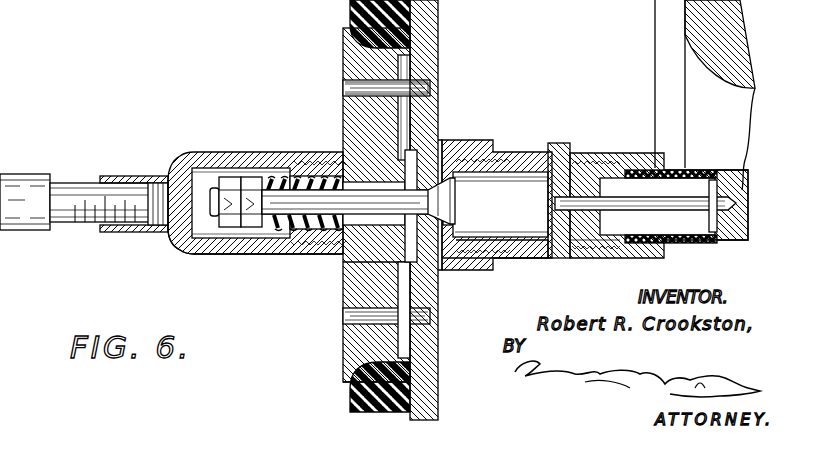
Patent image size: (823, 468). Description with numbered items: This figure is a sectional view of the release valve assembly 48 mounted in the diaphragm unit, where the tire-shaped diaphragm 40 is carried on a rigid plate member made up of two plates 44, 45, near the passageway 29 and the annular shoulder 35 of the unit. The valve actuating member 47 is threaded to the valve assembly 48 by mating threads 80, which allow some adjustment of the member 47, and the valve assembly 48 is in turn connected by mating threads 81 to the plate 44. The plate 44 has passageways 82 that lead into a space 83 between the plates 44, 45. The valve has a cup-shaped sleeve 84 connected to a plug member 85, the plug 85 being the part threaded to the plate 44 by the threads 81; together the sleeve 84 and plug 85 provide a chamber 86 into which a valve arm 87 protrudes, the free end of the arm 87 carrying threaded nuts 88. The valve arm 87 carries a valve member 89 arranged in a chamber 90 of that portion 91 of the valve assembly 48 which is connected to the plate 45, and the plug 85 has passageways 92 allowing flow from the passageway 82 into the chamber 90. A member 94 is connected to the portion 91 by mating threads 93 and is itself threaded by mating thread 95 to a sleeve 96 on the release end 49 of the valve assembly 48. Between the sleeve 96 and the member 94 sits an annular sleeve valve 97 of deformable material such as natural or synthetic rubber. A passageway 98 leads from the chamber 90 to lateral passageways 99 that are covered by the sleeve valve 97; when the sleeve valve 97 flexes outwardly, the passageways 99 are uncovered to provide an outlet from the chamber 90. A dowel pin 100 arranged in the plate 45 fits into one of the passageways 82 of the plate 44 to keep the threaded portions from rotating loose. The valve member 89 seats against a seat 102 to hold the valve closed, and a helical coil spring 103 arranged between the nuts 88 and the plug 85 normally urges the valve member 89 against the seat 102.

The passageway 29 is at (720, 95).
The annular shoulder 35 is at (685, 18).
The diaphragm 40 is at (350, 8).
The plate 44 is at (348, 342).
The plate 45 is at (425, 332).
The valve actuating member 47 is at (30, 182).
The release valve assembly 48 is at (250, 162).
The release end 49 is at (690, 170).
The mating threads 80 is at (130, 186).
The mating threads 81 is at (343, 288).
The passageways 82 is at (345, 88).
The space 83 is at (420, 65).
The cup-shaped sleeve 84 is at (247, 254).
The plug member 85 is at (370, 170).
The chamber 86 is at (207, 232).
The valve arm 87 is at (300, 196).
The threaded nuts 88 is at (228, 190).
The valve member 89 is at (443, 204).
The chamber 90 is at (520, 188).
The portion of the valve 91 is at (470, 152).
The passageways 92 is at (425, 262).
The mating threads 93 is at (520, 262).
The member 94 is at (558, 160).
The mating thread 95 is at (592, 256).
The sleeve 96 is at (595, 158).
The annular sleeve valve 97 is at (730, 176).
The passageway 98 is at (668, 212).
The lateral passageways 99 is at (717, 228).
The dowel pin 100 is at (422, 92).
The seat 102 is at (440, 140).
The helical coil spring 103 is at (325, 228).